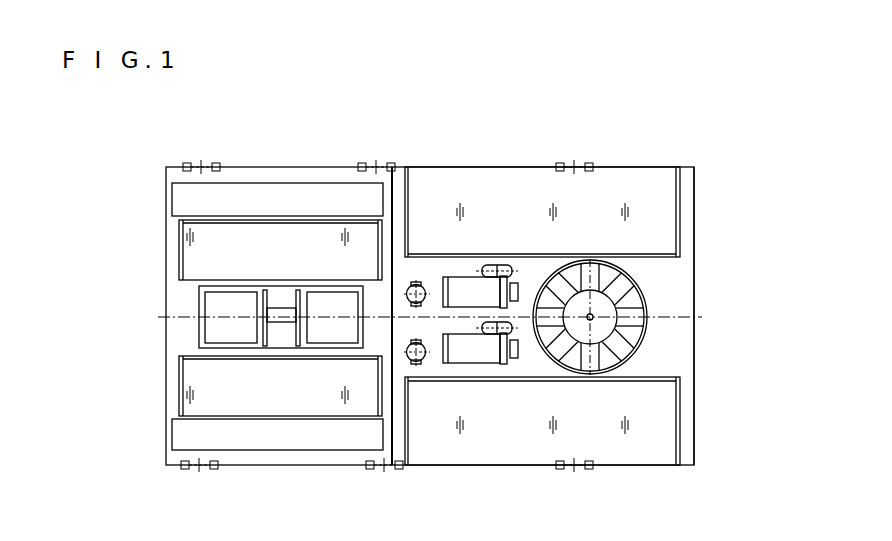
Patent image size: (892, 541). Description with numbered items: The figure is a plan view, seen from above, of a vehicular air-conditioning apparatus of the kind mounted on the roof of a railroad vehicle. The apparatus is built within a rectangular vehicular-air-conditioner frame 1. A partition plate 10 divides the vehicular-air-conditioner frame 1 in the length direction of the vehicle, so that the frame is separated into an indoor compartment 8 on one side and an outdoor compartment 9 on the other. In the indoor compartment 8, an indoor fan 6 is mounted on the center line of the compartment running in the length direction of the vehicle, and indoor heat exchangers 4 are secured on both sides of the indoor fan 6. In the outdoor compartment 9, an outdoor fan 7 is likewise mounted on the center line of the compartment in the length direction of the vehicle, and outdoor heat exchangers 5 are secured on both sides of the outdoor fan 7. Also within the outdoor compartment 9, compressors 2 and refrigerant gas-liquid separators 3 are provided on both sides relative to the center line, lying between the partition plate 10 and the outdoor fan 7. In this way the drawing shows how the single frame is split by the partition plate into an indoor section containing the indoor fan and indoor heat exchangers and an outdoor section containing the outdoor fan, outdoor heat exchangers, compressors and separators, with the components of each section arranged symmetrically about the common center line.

The vehicular-air-conditioner frame 1 is at (287, 168).
The compressor 2 is at (470, 275).
The refrigerant gas-liquid separator 3 is at (420, 287).
The indoor heat exchanger 4 is at (322, 218).
The outdoor heat exchanger 5 is at (636, 166).
The indoor fan 6 is at (283, 347).
The outdoor fan 7 is at (644, 290).
The indoor compartment 8 is at (233, 176).
The outdoor compartment 9 is at (686, 266).
The partition plate 10 is at (393, 430).